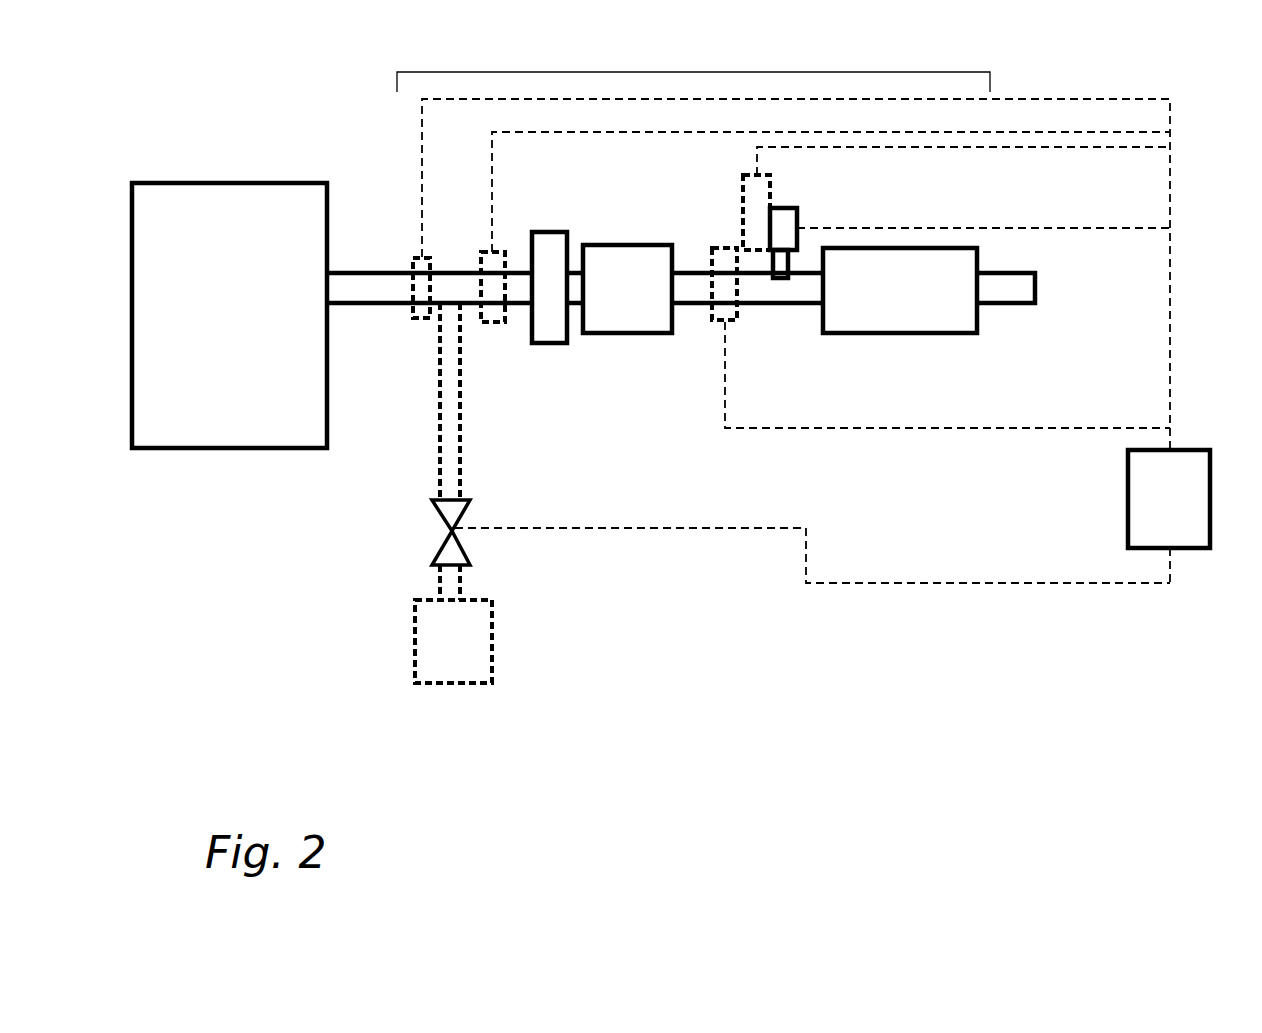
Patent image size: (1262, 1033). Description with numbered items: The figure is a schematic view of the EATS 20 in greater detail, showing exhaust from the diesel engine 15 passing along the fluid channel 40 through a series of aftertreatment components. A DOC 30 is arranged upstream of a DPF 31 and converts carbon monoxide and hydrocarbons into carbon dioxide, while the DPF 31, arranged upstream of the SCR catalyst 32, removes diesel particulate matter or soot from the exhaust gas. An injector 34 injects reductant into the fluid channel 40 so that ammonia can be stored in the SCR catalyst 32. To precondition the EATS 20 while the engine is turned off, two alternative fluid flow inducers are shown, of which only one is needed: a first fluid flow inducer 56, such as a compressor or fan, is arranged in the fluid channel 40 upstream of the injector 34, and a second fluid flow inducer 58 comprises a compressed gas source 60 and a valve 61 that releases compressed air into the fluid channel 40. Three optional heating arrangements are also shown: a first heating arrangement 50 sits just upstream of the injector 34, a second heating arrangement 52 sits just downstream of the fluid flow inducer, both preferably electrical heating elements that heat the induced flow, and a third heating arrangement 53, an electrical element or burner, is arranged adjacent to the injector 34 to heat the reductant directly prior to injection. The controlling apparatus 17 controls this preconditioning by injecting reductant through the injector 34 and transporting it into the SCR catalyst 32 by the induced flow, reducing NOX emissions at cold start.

The diesel engine 15 is at (232, 205).
The controlling apparatus 17 is at (1190, 550).
The EATS 20 is at (693, 70).
The DOC 30 is at (546, 345).
The DPF 31 is at (625, 334).
The SCR catalyst 32 is at (878, 335).
The injector 34 is at (797, 225).
The fluid channel 40 is at (781, 354).
The first heating arrangement 50 is at (712, 323).
The second heating arrangement 52 is at (487, 250).
The third heating arrangement 53 is at (745, 232).
The first fluid flow inducer 56 is at (418, 318).
The second fluid flow inducer 58 is at (379, 595).
The compressed gas source 60 is at (492, 640).
The valve 61 is at (458, 542).